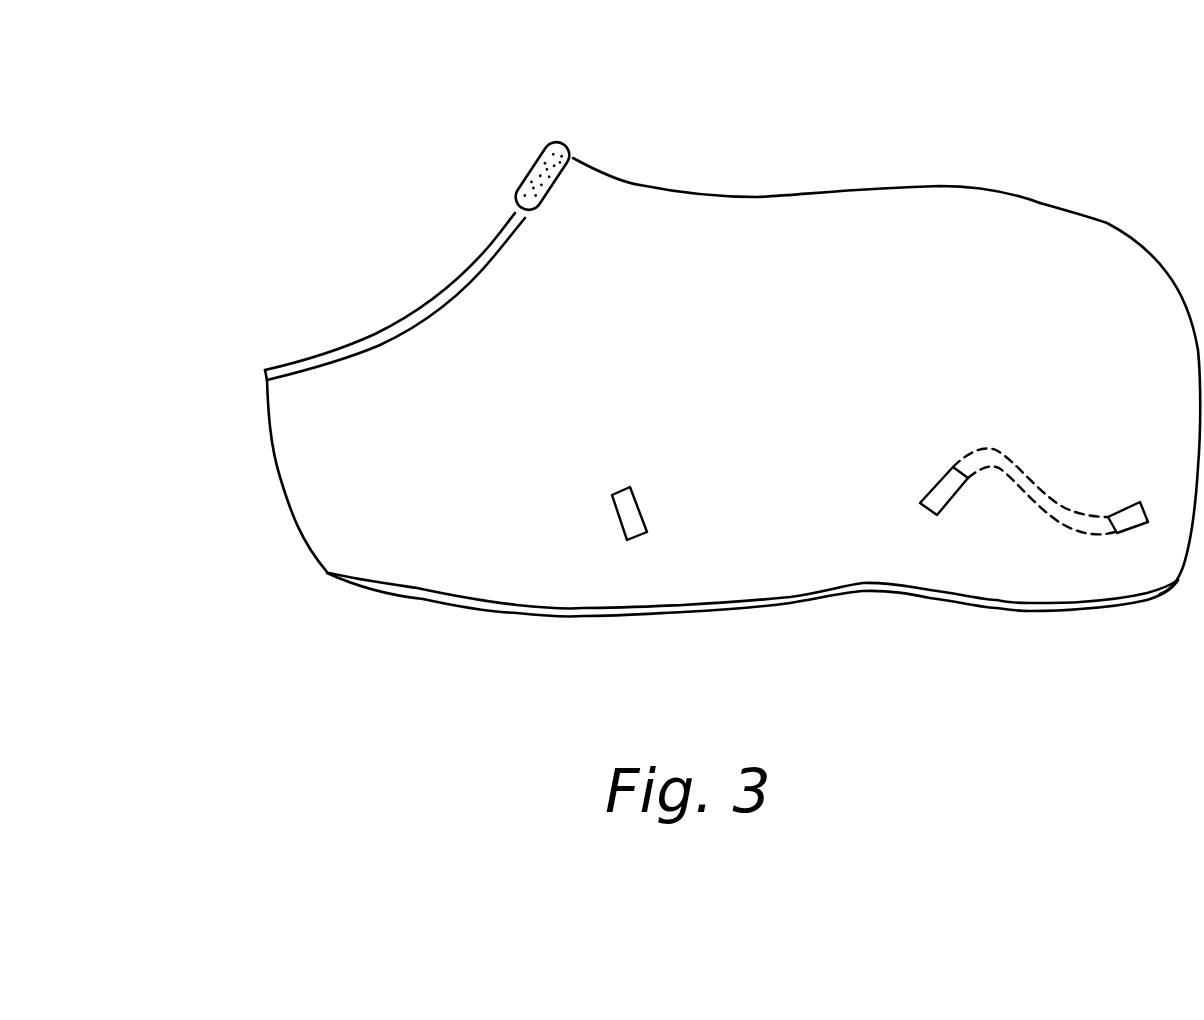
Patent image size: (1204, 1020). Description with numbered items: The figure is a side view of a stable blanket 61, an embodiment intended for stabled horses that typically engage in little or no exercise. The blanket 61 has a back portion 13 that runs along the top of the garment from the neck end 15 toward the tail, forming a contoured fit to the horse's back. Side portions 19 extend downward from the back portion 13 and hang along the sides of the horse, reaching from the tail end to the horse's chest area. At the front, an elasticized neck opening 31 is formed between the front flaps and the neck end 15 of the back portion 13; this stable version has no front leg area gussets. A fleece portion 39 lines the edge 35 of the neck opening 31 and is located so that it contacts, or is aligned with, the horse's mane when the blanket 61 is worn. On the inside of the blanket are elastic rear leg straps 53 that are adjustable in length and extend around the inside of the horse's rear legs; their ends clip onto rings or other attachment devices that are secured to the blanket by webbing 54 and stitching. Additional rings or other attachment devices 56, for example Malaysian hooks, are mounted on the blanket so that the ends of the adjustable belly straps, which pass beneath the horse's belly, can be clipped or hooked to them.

The back portion 13 is at (893, 184).
The neck end 15 is at (575, 158).
The side portions 19 is at (430, 555).
The neck opening 31 is at (366, 235).
The edge of the neck opening 35 is at (358, 342).
The fleece portion 39 is at (552, 140).
The rear leg straps 53 is at (1008, 443).
The webbing 54 is at (1127, 502).
The attachment devices 56 is at (641, 508).
The blanket 61 is at (1102, 223).